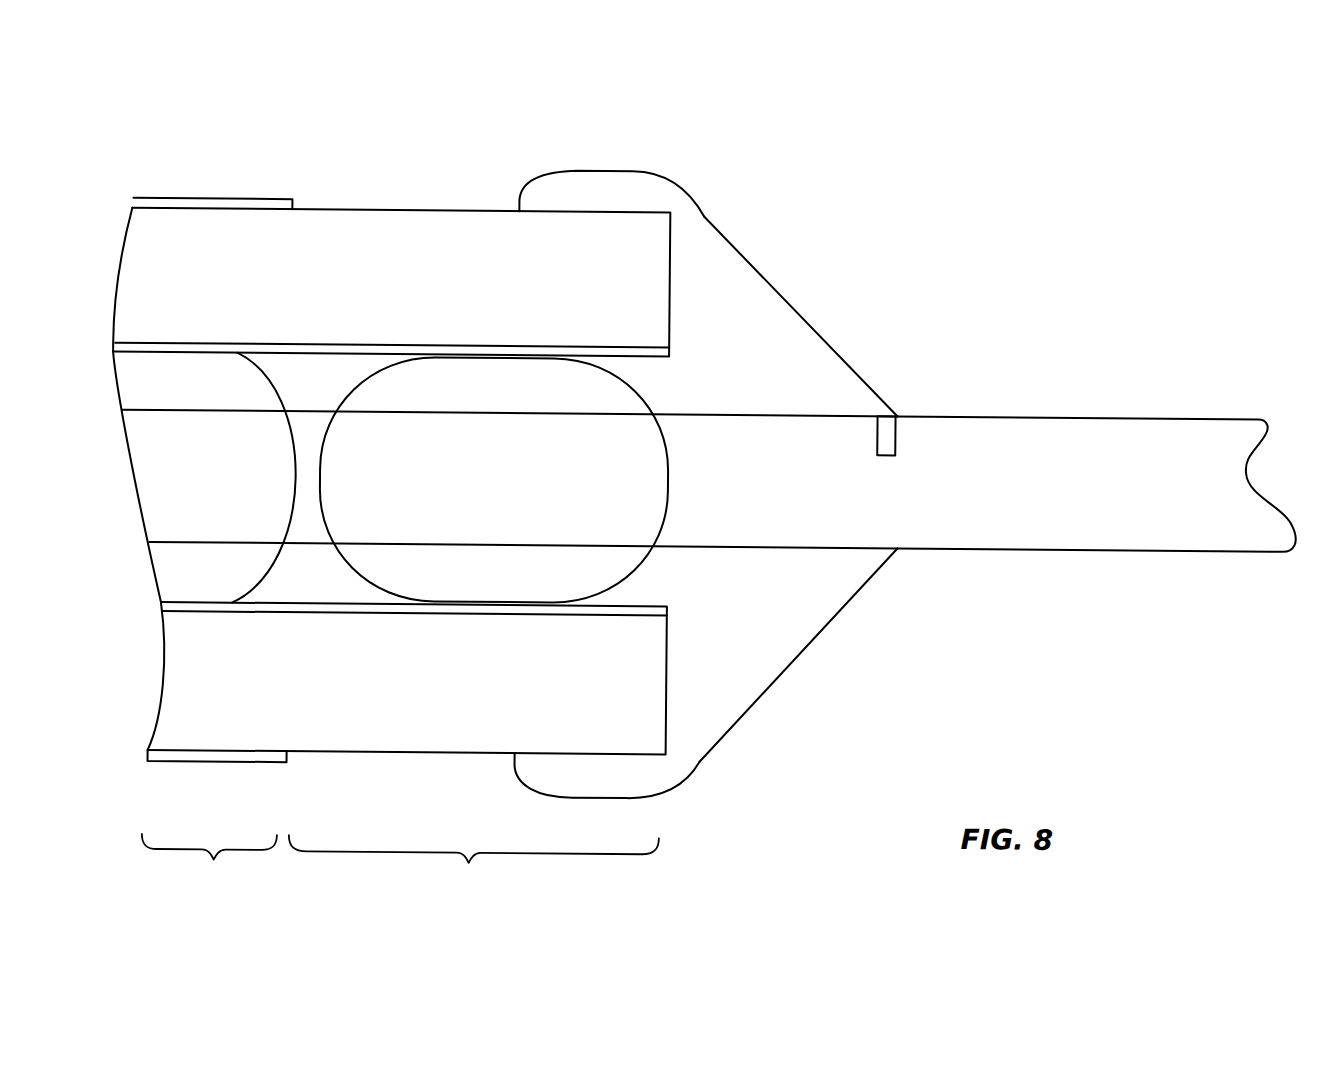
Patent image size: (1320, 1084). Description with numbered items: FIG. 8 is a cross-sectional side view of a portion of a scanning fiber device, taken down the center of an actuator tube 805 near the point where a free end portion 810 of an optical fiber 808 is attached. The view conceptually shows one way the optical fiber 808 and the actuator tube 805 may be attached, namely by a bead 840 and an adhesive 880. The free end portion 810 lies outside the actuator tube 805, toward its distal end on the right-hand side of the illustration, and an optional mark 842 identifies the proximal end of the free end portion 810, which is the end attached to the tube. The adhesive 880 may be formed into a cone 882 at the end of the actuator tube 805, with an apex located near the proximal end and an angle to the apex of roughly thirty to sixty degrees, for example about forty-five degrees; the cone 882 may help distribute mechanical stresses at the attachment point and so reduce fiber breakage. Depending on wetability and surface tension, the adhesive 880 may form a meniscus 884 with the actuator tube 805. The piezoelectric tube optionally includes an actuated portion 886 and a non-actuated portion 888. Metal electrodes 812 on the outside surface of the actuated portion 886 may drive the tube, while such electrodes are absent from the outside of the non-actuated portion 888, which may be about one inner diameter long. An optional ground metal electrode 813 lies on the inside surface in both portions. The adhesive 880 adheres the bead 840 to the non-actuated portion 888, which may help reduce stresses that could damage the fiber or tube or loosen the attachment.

The actuator tube 805 is at (416, 210).
The optical fiber 808 is at (197, 414).
The free end portion 810 is at (1093, 419).
The metal electrodes 812 is at (214, 200).
The ground metal electrode 813 is at (653, 604).
The bead 840 is at (669, 462).
The mark 842 is at (893, 447).
The adhesive 880 is at (745, 247).
The cone 882 is at (875, 287).
The meniscus 884 is at (258, 376).
The actuated portion 886 is at (209, 884).
The non-actuated portion 888 is at (473, 886).